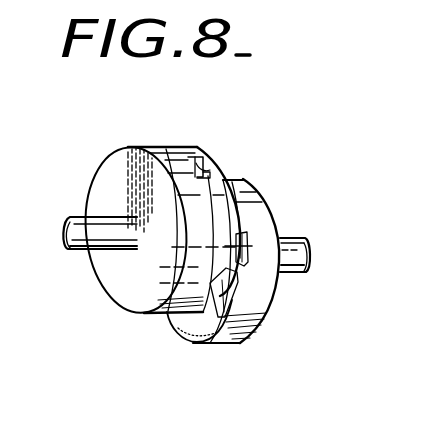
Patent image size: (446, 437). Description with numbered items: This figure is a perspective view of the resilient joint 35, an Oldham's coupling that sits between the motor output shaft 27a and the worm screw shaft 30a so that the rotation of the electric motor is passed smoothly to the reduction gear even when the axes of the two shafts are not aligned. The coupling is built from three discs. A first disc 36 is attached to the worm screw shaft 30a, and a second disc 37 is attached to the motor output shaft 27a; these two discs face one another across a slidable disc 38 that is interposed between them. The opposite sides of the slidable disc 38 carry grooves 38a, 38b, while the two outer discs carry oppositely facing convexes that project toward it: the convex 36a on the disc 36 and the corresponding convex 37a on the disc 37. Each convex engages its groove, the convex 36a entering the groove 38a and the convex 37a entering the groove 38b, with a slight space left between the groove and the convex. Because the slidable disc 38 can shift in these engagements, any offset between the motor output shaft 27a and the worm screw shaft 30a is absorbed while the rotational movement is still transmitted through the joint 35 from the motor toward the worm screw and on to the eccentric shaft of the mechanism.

The disc 36 is at (143, 147).
The convex 36a is at (198, 146).
The worm screw shaft 30a is at (70, 218).
The resilient joint 35 is at (258, 177).
The disc 37 is at (258, 218).
The motor output shaft 27a is at (305, 274).
The lug 37a is at (242, 302).
The slidable disc 38 is at (180, 333).
The groove 38b is at (210, 340).
The groove 38a is at (212, 172).